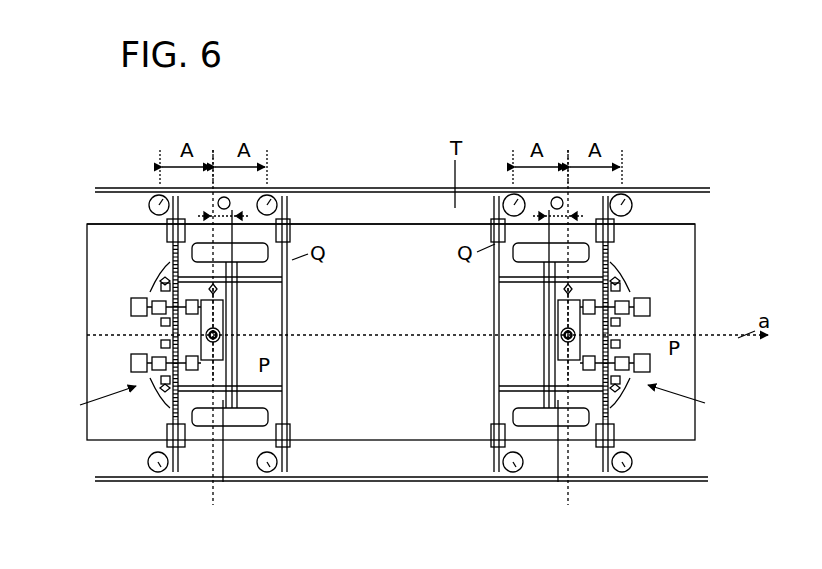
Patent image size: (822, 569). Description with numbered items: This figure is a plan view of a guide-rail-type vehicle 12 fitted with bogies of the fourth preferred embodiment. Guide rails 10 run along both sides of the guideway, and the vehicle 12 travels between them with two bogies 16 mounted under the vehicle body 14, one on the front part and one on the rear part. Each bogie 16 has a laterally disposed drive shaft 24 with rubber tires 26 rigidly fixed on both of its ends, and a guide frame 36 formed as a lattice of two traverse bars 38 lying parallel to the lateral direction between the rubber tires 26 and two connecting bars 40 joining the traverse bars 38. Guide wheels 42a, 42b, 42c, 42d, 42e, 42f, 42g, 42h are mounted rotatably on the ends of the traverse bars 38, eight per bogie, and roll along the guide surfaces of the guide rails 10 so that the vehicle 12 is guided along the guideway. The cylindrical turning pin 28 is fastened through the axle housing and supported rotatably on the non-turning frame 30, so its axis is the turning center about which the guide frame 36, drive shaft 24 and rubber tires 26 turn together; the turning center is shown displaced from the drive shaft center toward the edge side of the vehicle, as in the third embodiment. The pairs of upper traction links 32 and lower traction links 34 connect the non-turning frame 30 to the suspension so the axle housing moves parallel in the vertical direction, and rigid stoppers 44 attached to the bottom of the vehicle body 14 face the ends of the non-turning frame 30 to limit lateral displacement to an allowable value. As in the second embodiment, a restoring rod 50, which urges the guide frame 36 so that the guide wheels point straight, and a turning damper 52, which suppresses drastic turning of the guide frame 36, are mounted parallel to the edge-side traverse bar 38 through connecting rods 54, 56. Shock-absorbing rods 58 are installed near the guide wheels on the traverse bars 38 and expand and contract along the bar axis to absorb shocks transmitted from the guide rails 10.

The guide rail 10 is at (342, 188).
The vehicle 12 is at (401, 221).
The vehicle body 14 is at (700, 243).
The bogie 16 is at (87, 405).
The drive shaft 24 is at (495, 287).
The rubber tire 26 is at (219, 482).
The turning pin 28 is at (243, 318).
The non-turning frame 30 is at (165, 330).
The upper traction link 32 is at (130, 347).
The lower traction link 34 is at (390, 362).
The guide frame 36 is at (302, 408).
The traverse bar 38 is at (170, 447).
The connecting bar 40 is at (290, 383).
The guide wheel 42a is at (622, 196).
The guide wheel 42b is at (512, 196).
The guide wheel 42c is at (622, 473).
The guide wheel 42d is at (513, 473).
The guide wheel 42e is at (269, 196).
The guide wheel 42f is at (158, 196).
The guide wheel 42g is at (267, 471).
The guide wheel 42h is at (160, 471).
The rigid stopper 44 is at (168, 390).
The restoring rod 50 is at (130, 378).
The turning damper 52 is at (160, 292).
The connecting rod 54 is at (160, 440).
The connecting rod 56 is at (163, 282).
The shock-absorbing rod 58 is at (168, 447).